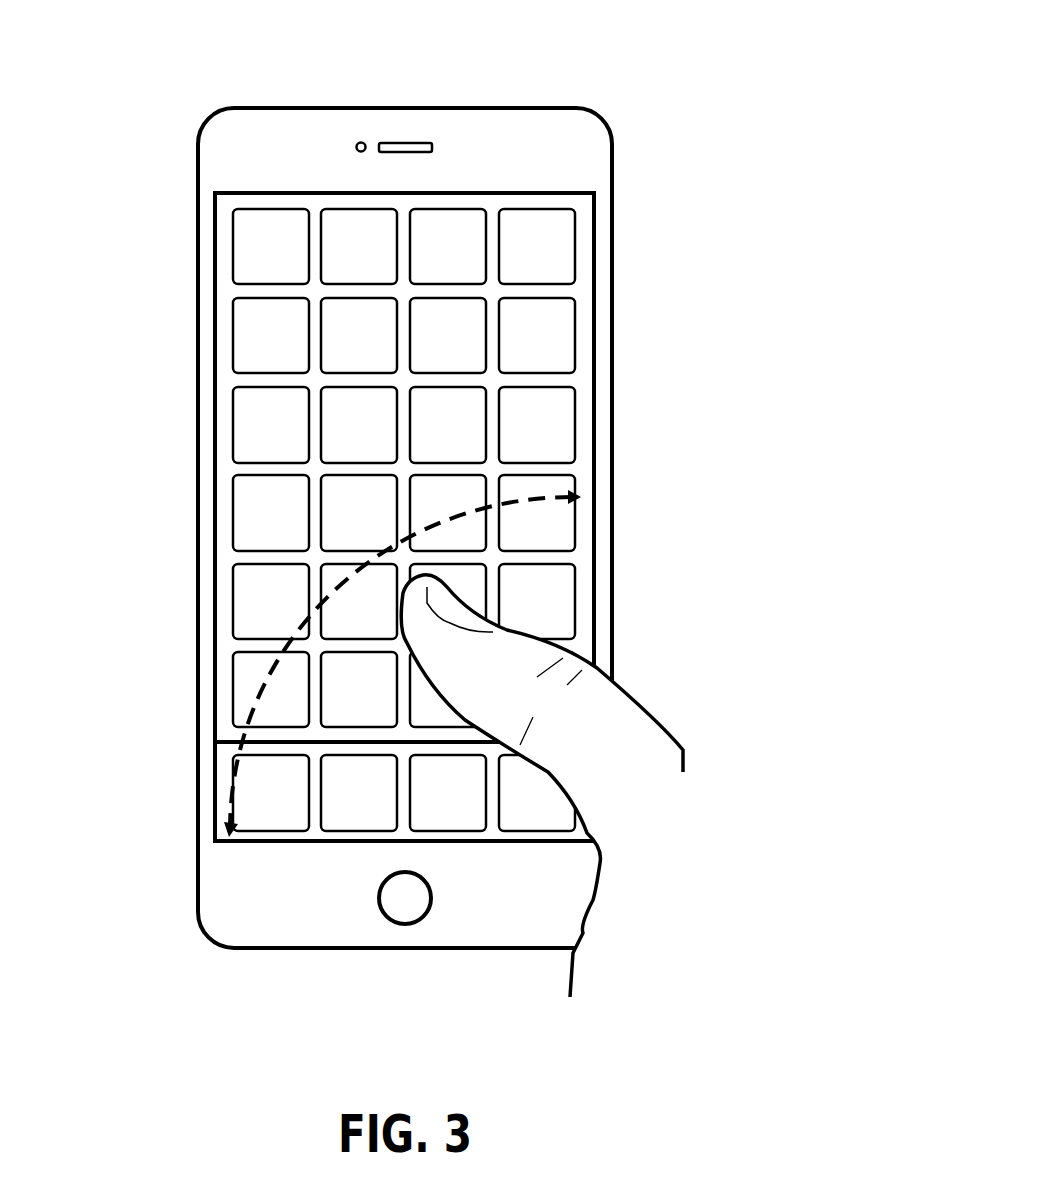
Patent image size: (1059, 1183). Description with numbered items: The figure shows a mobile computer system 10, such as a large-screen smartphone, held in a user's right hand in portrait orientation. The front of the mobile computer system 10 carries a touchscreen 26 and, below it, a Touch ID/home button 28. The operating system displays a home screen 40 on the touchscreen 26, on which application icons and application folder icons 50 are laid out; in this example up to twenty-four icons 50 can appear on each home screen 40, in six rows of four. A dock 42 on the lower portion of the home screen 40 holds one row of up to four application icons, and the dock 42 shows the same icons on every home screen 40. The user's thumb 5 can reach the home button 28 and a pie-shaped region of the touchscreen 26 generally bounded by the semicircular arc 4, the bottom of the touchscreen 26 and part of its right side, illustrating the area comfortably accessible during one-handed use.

The mobile computer system 10 is at (640, 58).
The touchscreen 26 is at (597, 190).
The Touch ID/home button 28 is at (390, 925).
The home screen 40 is at (328, 468).
The dock 42 is at (421, 808).
The application icon 50 is at (258, 336).
The semicircular arc 4 is at (581, 488).
The thumb 5 is at (657, 718).